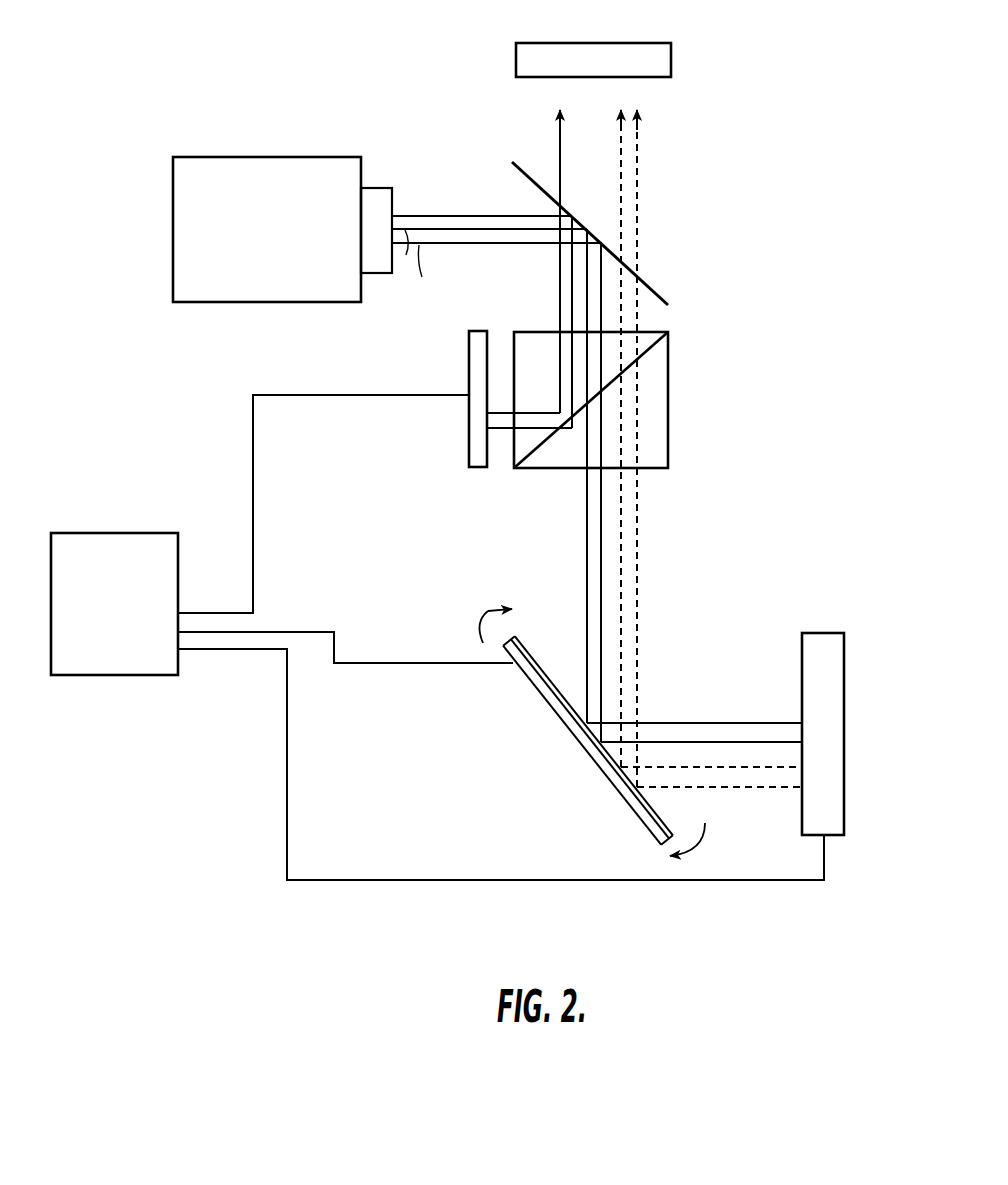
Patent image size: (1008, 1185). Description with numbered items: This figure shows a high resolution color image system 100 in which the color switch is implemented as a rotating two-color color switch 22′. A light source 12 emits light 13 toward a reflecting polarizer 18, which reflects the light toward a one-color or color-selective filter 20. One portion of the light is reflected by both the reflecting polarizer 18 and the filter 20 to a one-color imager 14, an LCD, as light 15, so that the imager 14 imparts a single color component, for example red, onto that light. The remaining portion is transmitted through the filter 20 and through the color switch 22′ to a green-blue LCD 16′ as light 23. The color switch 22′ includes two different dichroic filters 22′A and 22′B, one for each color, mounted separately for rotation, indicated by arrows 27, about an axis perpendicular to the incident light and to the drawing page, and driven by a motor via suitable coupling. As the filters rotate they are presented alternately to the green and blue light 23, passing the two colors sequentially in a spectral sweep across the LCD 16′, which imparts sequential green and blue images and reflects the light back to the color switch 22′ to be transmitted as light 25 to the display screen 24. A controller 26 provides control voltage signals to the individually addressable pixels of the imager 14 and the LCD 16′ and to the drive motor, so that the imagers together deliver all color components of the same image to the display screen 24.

The light source 12 is at (265, 157).
The light 13 is at (470, 200).
The reflecting polarizer 18 is at (657, 288).
The display screen 24 is at (613, 43).
The light 25 is at (649, 152).
The high resolution color image system 100 is at (793, 106).
The one-color or color-selective filter 20 is at (650, 354).
The one-color imager 14 is at (469, 455).
The light 15 is at (502, 435).
The controller 26 is at (149, 676).
The green-blue LCD 16′ is at (829, 633).
The light 23 is at (687, 685).
The color switch 22′ is at (547, 703).
The dichroic filter 22′A is at (537, 657).
The dichroic filter 22′B is at (580, 747).
The arrows 27 is at (746, 848).